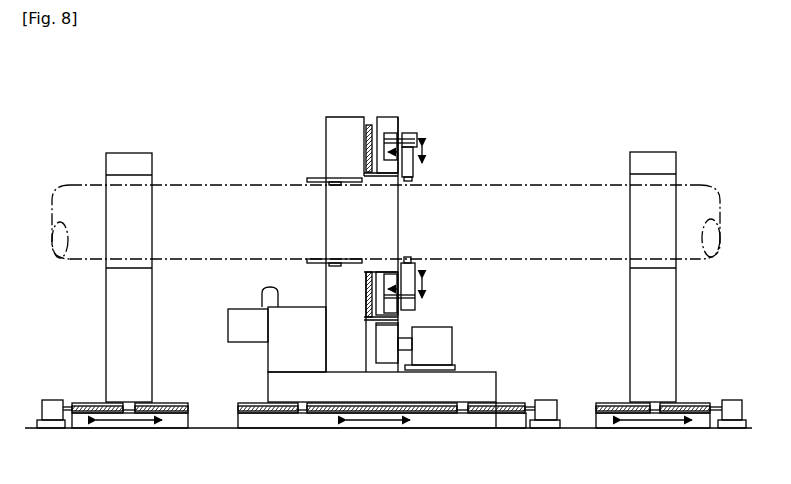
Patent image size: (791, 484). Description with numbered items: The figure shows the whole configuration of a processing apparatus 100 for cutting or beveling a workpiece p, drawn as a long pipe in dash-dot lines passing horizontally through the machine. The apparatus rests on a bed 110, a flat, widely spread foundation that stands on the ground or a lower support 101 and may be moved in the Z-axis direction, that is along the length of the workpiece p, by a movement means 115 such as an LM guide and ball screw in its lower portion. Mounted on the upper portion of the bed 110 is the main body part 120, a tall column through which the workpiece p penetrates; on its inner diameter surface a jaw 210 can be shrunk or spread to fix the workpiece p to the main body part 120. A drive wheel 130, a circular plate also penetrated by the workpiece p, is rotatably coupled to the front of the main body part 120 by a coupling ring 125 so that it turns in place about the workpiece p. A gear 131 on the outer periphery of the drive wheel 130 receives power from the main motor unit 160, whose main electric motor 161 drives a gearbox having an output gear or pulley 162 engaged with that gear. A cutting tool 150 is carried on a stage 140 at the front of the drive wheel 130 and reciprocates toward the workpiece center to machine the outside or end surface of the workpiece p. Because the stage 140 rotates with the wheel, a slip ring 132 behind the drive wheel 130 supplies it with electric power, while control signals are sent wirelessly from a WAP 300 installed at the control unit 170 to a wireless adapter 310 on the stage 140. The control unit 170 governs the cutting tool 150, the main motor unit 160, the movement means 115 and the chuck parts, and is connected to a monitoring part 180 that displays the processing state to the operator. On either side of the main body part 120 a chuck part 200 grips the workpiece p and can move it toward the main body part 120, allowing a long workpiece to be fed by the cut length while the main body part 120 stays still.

The processing apparatus 100 is at (237, 69).
The lower support 101 is at (455, 428).
The bed 110 is at (357, 388).
The movement means 115 is at (537, 393).
The main body part 120 is at (326, 138).
The coupling ring 125 is at (366, 173).
The drive wheel 130 is at (390, 118).
The gear 131 is at (386, 117).
The slip ring 132 is at (368, 125).
The stage 140 is at (431, 143).
The cutting tool 150 is at (418, 181).
The main motor unit 160 is at (467, 332).
The main electric motor 161 is at (452, 348).
The output gear or pulley 162 is at (388, 363).
The control unit 170 is at (307, 362).
The monitoring part 180 is at (237, 342).
The chuck part 200 is at (163, 159).
The jaw 210 is at (307, 182).
The WAP (Wireless Access Point) 300 is at (262, 298).
The wireless adapter 310 is at (421, 127).
The workpiece p is at (562, 262).